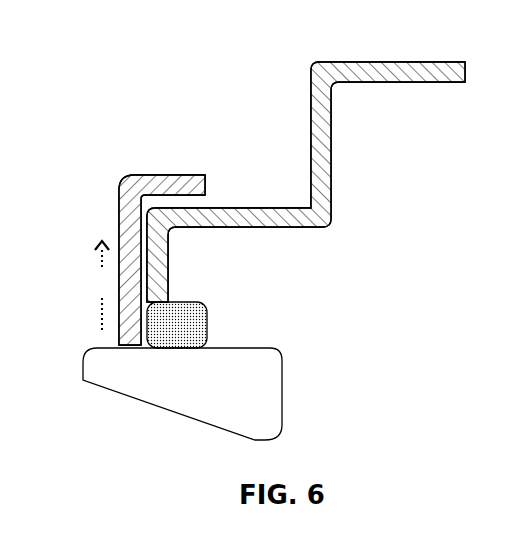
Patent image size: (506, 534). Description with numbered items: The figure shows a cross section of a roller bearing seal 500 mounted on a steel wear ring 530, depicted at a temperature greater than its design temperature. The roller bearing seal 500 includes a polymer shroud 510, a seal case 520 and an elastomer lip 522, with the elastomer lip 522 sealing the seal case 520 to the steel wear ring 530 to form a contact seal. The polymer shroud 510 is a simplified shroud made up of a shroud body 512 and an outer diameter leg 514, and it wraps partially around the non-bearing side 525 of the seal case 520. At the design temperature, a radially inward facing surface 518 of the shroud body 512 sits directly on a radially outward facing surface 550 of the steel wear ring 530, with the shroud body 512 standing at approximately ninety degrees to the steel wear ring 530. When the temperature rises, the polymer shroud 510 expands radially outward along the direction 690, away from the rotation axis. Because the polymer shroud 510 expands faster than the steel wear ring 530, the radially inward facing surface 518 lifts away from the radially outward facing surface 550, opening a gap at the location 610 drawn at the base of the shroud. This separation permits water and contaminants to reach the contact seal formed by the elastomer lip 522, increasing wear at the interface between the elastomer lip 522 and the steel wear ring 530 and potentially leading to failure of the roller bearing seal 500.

The roller bearing seal 500 is at (112, 80).
The polymer shroud 510 is at (118, 264).
The shroud body 512 is at (119, 210).
The outer diameter leg 514 is at (163, 175).
The radially inward facing surface 518 is at (131, 350).
The seal case 520 is at (258, 207).
The elastomer lip 522 is at (162, 335).
The non-bearing side 525 is at (189, 200).
The steel wear ring 530 is at (242, 405).
The radially outward facing surface 550 is at (243, 347).
The contact point 610 is at (112, 345).
The direction 690 is at (101, 286).